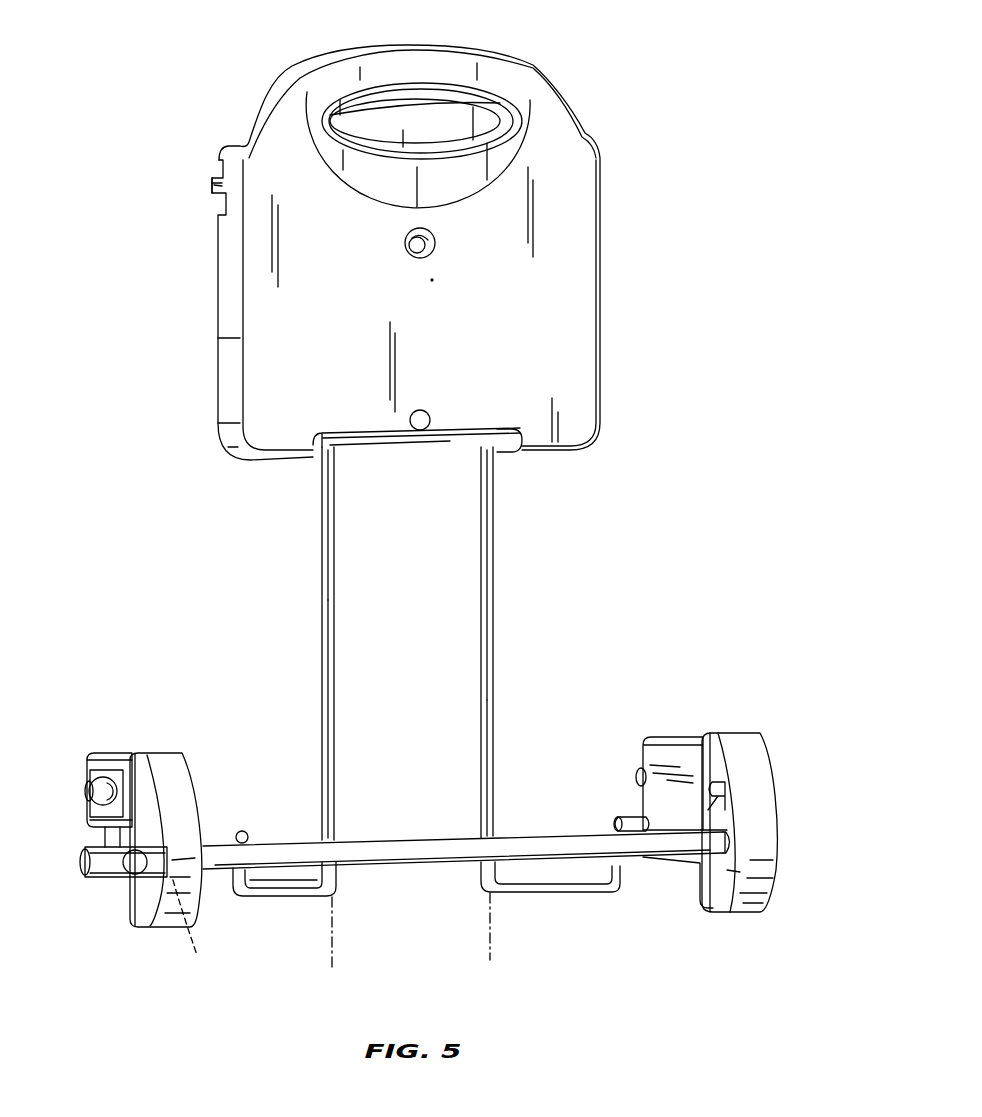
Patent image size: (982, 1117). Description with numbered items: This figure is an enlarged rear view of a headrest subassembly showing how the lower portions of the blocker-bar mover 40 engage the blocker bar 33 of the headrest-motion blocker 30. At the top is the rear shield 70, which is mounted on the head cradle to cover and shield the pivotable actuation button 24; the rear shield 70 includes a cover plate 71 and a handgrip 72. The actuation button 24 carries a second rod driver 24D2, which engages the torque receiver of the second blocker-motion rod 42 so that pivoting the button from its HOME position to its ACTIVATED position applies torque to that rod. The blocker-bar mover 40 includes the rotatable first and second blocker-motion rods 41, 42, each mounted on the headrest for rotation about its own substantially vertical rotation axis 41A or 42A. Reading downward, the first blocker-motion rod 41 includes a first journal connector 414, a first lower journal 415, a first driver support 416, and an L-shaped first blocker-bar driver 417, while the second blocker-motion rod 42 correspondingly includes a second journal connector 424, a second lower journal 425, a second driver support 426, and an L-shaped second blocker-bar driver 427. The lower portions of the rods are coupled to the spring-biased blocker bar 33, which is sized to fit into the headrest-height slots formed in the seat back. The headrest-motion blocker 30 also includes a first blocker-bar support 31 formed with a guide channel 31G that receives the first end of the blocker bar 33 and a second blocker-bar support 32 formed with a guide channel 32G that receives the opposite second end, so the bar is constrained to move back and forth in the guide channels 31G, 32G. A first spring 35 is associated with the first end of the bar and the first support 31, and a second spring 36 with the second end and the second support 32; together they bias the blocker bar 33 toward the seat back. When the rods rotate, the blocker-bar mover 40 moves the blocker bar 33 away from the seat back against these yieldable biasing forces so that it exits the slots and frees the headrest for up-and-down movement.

The pivotable actuation button 24 is at (488, 207).
The second rod driver 24D2 is at (212, 185).
The rear shield 70 is at (623, 268).
The cover plate 71 is at (530, 352).
The handgrip 72 is at (478, 105).
The headrest-motion blocker 30 is at (108, 673).
The first blocker-bar support 31 is at (678, 733).
The guide channel 31G is at (722, 830).
The second blocker-bar support 32 is at (150, 752).
The guide channel 32G is at (190, 927).
The blocker bar 33 is at (387, 867).
The first spring 35 is at (733, 838).
The second spring 36 is at (132, 838).
The blocker-bar mover 40 is at (572, 520).
The first blocker-motion rod 41 is at (500, 602).
The rotation axis 41A is at (490, 935).
The first journal connector 414 is at (497, 692).
The first lower journal 415 is at (497, 768).
The first driver support 416 is at (555, 890).
The first blocker-bar driver 417 is at (610, 823).
The second blocker-motion rod 42 is at (307, 480).
The rotation axis 42A is at (332, 942).
The second journal connector 424 is at (322, 597).
The second lower journal 425 is at (325, 725).
The second driver support 426 is at (285, 897).
The second blocker-bar driver 427 is at (242, 830).